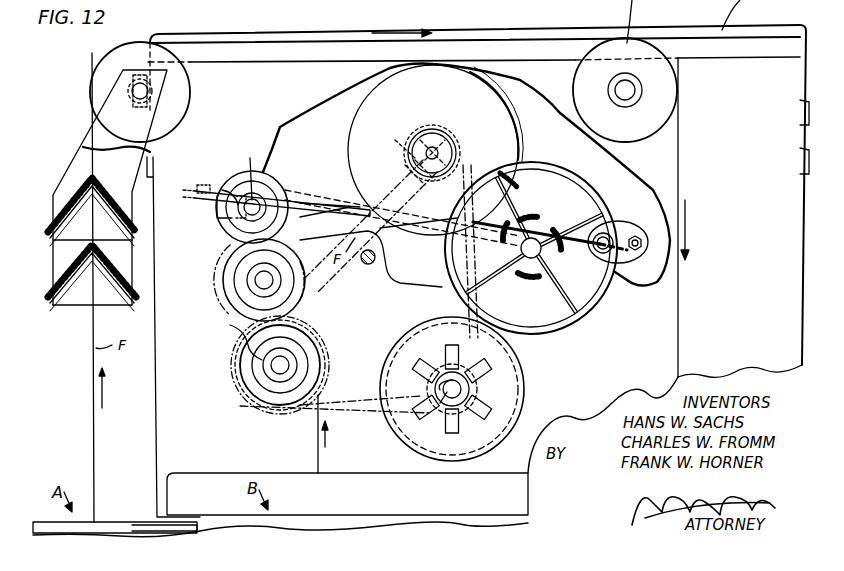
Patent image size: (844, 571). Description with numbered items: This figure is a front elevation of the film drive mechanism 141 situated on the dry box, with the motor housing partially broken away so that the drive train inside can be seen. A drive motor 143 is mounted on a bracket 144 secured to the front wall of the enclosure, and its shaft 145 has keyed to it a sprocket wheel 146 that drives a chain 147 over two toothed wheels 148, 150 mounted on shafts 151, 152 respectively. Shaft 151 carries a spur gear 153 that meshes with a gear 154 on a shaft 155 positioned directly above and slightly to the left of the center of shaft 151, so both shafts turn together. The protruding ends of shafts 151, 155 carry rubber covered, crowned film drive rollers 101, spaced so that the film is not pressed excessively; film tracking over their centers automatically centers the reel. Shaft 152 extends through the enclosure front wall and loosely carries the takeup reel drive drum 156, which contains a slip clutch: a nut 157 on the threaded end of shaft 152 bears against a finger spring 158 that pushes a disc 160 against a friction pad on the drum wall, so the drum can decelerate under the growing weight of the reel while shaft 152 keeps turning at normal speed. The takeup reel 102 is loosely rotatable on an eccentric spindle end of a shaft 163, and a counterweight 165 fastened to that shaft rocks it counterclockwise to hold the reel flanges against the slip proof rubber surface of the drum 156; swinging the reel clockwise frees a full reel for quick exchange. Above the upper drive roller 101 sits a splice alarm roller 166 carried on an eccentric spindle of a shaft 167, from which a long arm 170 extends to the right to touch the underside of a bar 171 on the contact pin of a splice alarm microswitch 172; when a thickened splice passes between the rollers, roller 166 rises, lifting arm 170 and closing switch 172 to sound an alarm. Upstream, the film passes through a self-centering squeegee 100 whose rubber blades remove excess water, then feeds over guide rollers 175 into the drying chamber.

The self-centering squeegee 100 is at (64, 163).
The film drive rollers 101 is at (250, 358).
The takeup reel 102 is at (563, 330).
The film drive mechanism 141 is at (686, 85).
The drive motor 143 is at (370, 115).
The bracket 144 is at (413, 264).
The motor shaft 145 is at (432, 150).
The sprocket wheel 146 is at (425, 172).
The chain 147 is at (358, 202).
The toothed wheel 148 is at (234, 392).
The toothed wheel 150 is at (437, 365).
The shaft 151 is at (272, 366).
The shaft 152 is at (440, 390).
The spur gear 153 is at (308, 326).
The gear 154 is at (300, 296).
The shaft 155 is at (262, 280).
The takeup reel drive drum 156 is at (472, 462).
The nut 157 is at (440, 403).
The finger spring 158 is at (490, 400).
The disc 160 is at (480, 441).
The shaft 163 is at (528, 252).
The counterweight 165 is at (395, 140).
The splice alarm roller 166 is at (230, 230).
The shaft 167 is at (208, 219).
The long arm 170 is at (303, 190).
The bar 171 is at (596, 215).
The splice alarm microswitch 172 is at (650, 256).
The guide rollers 175 is at (130, 50).